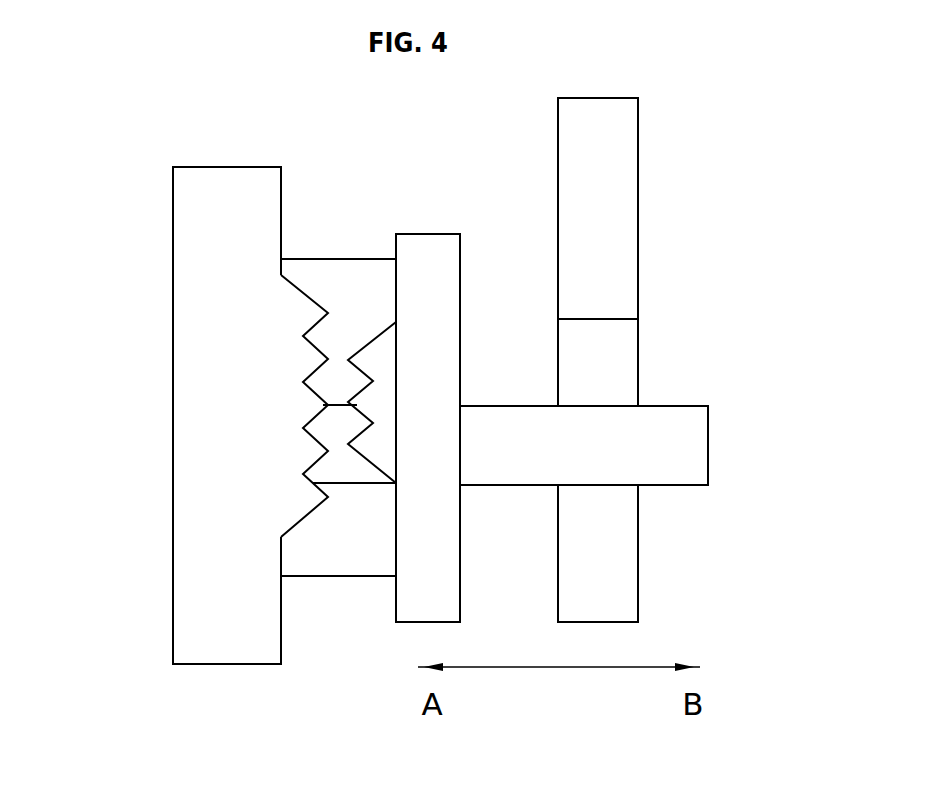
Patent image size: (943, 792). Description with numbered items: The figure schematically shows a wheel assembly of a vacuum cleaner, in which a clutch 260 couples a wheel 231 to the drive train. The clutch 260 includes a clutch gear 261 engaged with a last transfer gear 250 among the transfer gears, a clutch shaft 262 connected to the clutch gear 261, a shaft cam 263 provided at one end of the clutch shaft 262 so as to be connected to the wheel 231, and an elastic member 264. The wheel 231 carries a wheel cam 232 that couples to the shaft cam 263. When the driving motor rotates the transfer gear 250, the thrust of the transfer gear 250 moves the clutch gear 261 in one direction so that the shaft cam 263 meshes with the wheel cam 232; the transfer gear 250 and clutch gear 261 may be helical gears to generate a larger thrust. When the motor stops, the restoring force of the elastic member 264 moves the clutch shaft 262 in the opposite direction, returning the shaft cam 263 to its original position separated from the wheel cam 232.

The wheel 231 is at (172, 318).
The wheel cam 232 is at (307, 294).
The transfer gear 250 is at (639, 192).
The clutch 260 is at (644, 360).
The clutch gear 261 is at (639, 360).
The clutch shaft 262 is at (707, 444).
The shaft cam 263 is at (370, 463).
The elastic member 264 is at (362, 259).